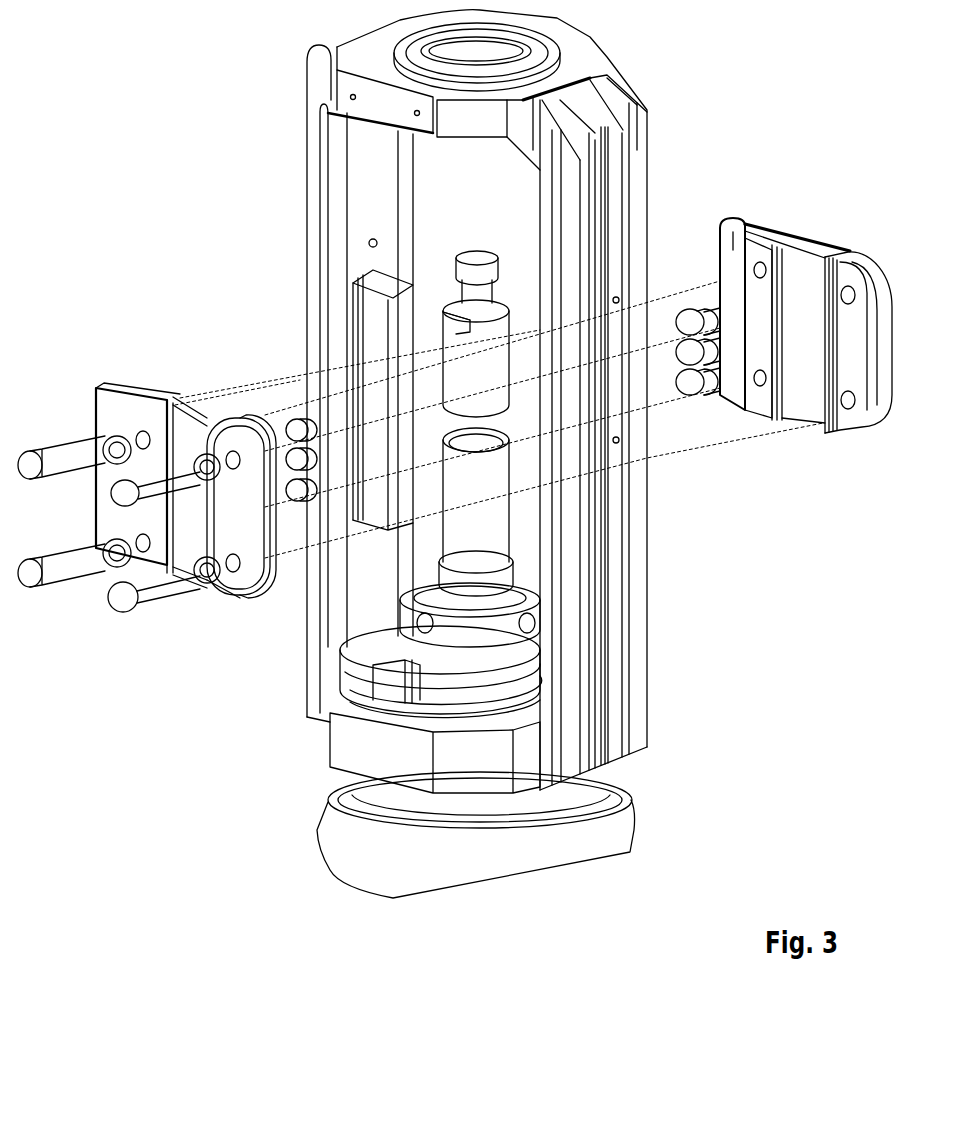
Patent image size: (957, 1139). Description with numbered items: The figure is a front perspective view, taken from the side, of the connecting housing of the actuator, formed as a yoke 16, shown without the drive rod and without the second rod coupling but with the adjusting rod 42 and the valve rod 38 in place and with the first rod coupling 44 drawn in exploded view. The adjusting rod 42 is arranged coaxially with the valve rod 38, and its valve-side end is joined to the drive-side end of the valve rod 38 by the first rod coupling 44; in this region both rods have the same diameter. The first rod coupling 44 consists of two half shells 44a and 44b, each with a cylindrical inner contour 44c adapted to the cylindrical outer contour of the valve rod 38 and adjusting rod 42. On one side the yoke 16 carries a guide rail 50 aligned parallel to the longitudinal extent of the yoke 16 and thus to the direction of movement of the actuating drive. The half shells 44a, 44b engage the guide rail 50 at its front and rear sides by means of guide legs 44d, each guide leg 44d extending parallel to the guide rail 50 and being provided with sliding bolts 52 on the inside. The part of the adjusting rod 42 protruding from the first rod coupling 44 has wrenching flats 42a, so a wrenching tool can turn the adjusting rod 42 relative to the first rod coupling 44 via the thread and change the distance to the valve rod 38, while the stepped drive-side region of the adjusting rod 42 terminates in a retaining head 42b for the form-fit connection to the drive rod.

The yoke 16 is at (305, 140).
The valve rod 38 is at (480, 530).
The adjusting rod 42 is at (446, 307).
The wrenching flats 42a is at (372, 348).
The retaining head 42b is at (375, 243).
The first rod coupling 44 is at (92, 390).
The half shell 44a is at (235, 600).
The half shell 44b is at (880, 420).
The cylindrical inner contour 44c is at (150, 388).
The guide leg 44d is at (110, 412).
The guide rail 50 is at (392, 372).
The sliding bolts 52 is at (686, 306).